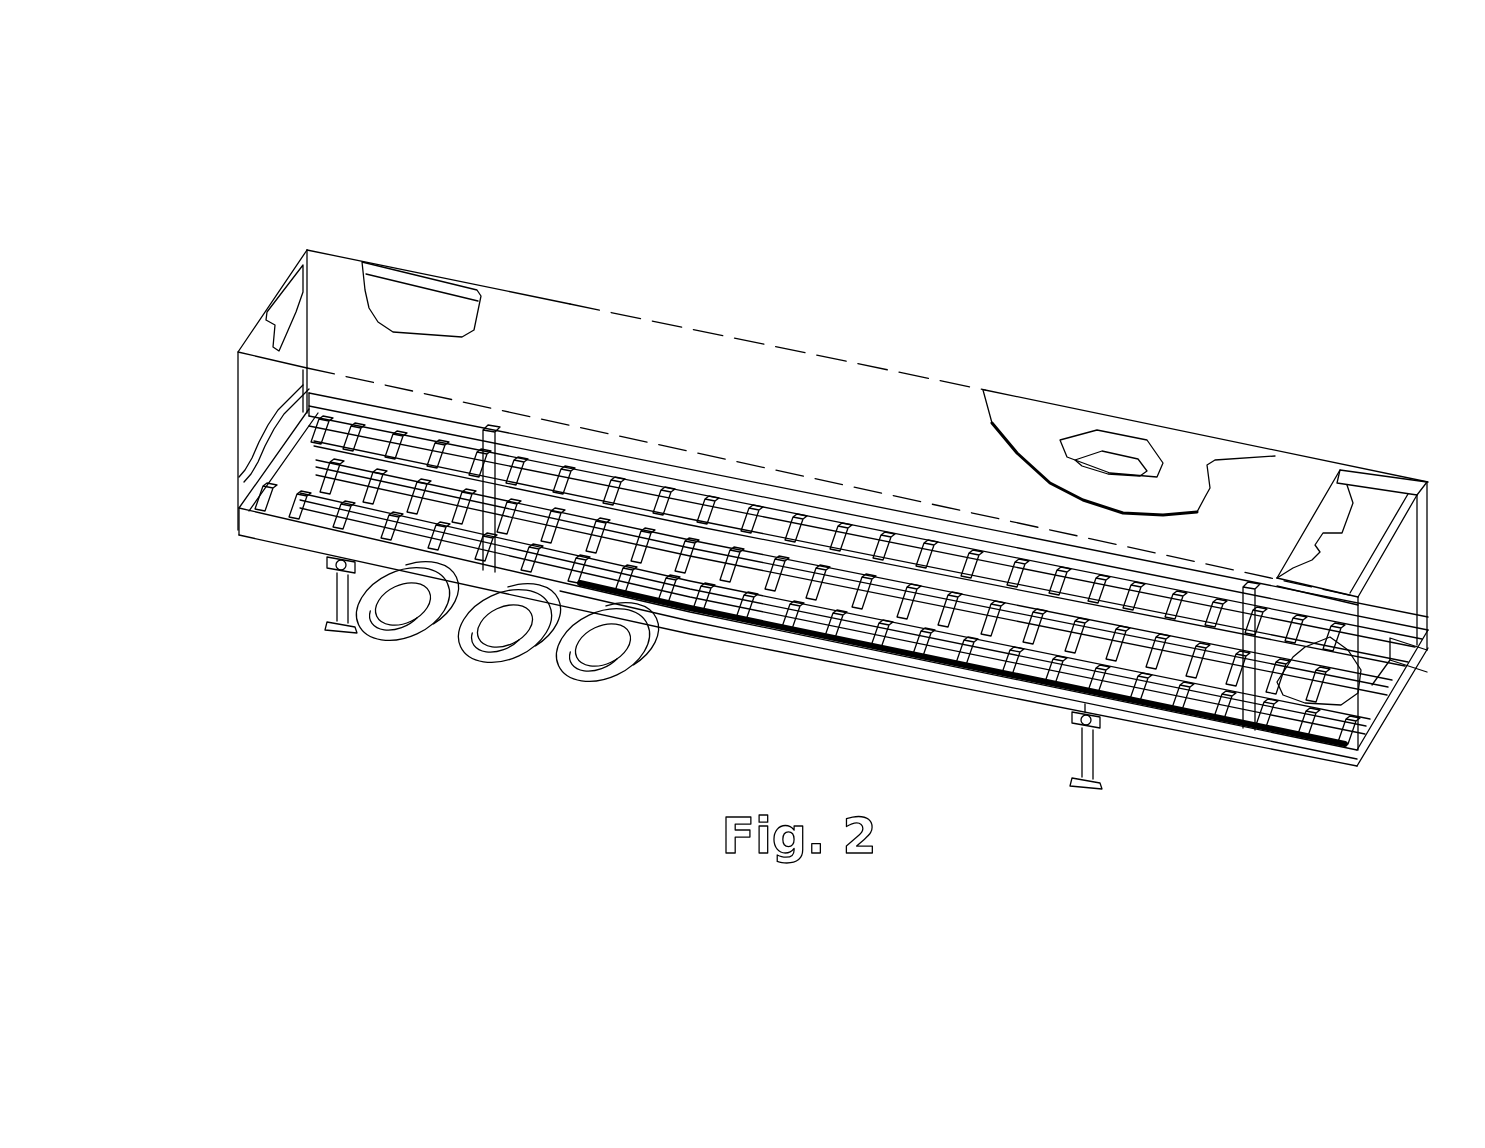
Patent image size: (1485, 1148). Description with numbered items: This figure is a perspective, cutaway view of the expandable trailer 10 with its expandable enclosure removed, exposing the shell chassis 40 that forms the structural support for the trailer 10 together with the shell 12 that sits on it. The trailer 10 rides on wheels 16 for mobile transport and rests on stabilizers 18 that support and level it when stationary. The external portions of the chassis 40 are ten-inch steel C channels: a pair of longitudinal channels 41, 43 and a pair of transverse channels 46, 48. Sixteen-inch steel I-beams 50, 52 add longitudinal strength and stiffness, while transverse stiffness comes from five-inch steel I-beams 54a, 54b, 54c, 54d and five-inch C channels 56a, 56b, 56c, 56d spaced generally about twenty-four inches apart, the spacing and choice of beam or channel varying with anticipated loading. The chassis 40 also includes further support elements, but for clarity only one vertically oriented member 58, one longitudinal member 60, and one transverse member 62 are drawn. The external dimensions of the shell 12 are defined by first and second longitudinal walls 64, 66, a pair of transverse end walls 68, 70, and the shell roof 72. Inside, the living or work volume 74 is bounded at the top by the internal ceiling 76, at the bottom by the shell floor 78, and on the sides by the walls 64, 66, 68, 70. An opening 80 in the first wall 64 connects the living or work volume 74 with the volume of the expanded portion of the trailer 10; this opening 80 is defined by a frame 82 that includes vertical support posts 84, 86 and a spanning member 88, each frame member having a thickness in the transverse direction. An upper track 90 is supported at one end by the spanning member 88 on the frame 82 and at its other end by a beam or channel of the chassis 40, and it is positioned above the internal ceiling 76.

The expandable trailer 10 is at (1042, 306).
The shell 12 is at (792, 368).
The wheels 16 is at (395, 634).
The stabilizers 18 is at (336, 580).
The shell chassis 40 is at (1226, 752).
The longitudinal C channel 41 is at (862, 656).
The longitudinal C channel 43 is at (323, 416).
The transverse C channel 46 is at (250, 508).
The transverse C channel 48 is at (1424, 670).
The longitudinal I-beam 50 is at (792, 647).
The longitudinal I-beam 52 is at (978, 608).
The transverse I-beam 54a is at (660, 494).
The transverse I-beam 54b is at (610, 483).
The transverse I-beam 54c is at (560, 473).
The transverse I-beam 54d is at (513, 462).
The transverse C channel 56a is at (968, 563).
The transverse C channel 56b is at (923, 553).
The transverse C channel 56c is at (880, 543).
The transverse C channel 56d is at (837, 533).
The vertically oriented member 58 is at (1432, 532).
The longitudinal member 60 is at (1380, 470).
The transverse member 62 is at (1390, 530).
The first wall 64 is at (247, 386).
The second wall 66 is at (383, 282).
The end wall 68 is at (287, 284).
The end wall 70 is at (1367, 735).
The shell roof 72 is at (1174, 442).
The internal living or work volume 74 is at (1114, 456).
The internal ceiling 76 is at (1083, 430).
The shell floor 78 is at (1312, 697).
The opening 80 is at (1134, 568).
The frame 82 is at (712, 470).
The vertical support post 84 is at (482, 430).
The vertical support post 86 is at (1247, 590).
The spanning member 88 is at (1073, 543).
The upper track 90 is at (775, 478).